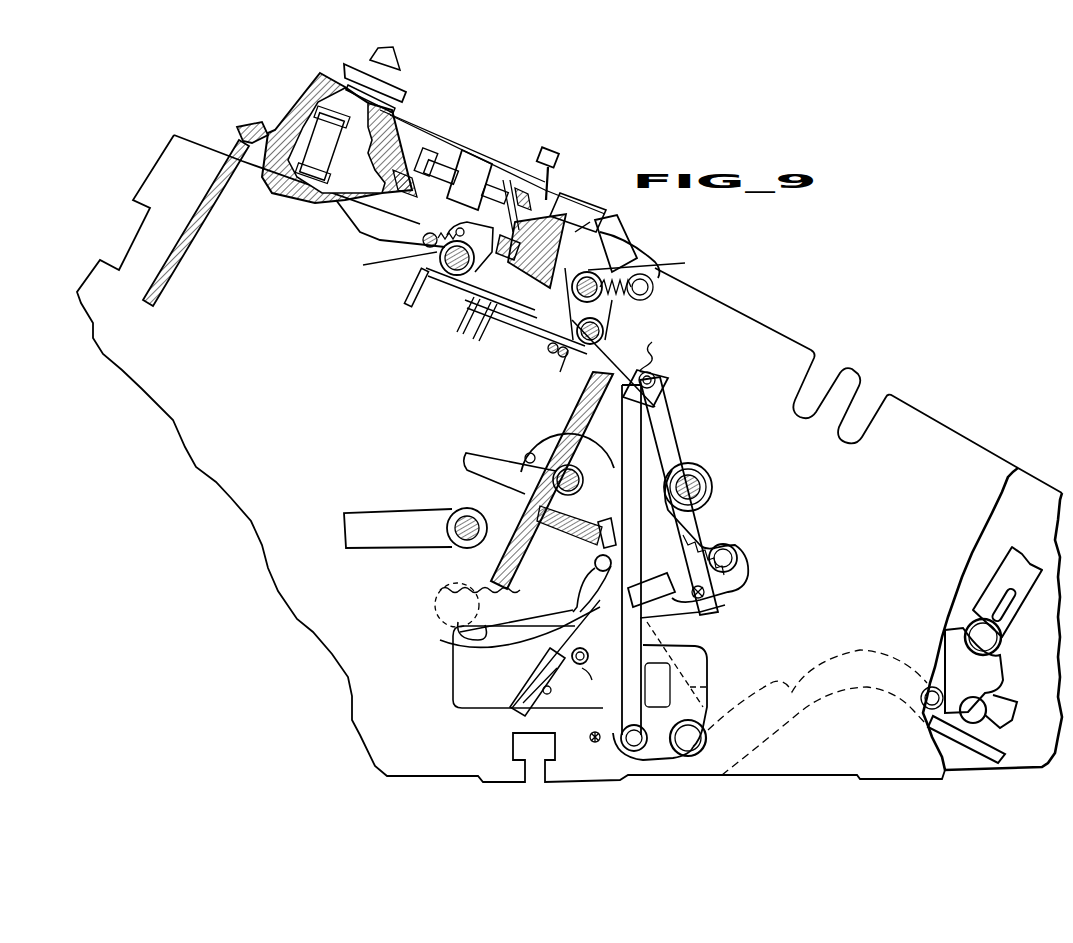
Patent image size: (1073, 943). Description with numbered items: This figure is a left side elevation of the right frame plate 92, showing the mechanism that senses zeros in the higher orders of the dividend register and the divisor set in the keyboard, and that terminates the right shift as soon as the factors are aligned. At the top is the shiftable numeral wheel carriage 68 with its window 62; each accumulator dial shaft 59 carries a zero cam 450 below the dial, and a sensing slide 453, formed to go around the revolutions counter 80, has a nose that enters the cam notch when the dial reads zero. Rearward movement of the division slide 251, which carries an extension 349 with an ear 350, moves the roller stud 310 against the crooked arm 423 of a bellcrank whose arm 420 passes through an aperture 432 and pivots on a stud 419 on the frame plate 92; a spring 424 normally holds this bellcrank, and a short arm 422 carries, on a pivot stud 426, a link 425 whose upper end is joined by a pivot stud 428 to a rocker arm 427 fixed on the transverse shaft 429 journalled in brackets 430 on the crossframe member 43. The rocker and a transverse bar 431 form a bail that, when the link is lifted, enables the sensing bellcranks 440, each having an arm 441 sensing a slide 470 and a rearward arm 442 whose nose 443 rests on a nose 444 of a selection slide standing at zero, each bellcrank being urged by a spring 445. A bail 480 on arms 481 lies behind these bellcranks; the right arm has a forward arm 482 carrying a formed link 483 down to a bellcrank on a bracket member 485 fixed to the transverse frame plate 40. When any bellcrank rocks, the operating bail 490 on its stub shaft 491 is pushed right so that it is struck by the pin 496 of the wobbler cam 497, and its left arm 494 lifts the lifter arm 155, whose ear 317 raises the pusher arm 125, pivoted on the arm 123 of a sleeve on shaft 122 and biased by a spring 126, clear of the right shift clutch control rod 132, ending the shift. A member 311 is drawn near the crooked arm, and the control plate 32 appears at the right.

The shiftable numeral wheel carriage 68 is at (322, 70).
The window 62 is at (400, 88).
The zero cam 450 is at (394, 107).
The sensing slide 453 is at (402, 114).
The accumulator dial shaft 59 is at (338, 147).
The revolutions counter 80 is at (443, 202).
The crossframe member 43 is at (553, 207).
The sensing slide 470 is at (580, 216).
The bracket 430 is at (580, 230).
The upwardly and rearwardly extending arm 441 is at (607, 247).
The bail 480 is at (625, 252).
The transverse bar 431 is at (650, 268).
The spring 445 is at (655, 283).
The sensing bellcrank 440 is at (620, 300).
The rocker arm 427 is at (615, 322).
The pivot stud 428 is at (667, 348).
The forwardly extending arm 482 is at (651, 372).
The formed link 483 is at (660, 450).
The arm 481 is at (550, 285).
The nose 443 is at (470, 303).
The nose 444 is at (533, 312).
The rearwardly extending arm 442 is at (545, 352).
The transverse shaft 429 is at (586, 381).
The transverse frame plate 40 is at (592, 412).
The arm 420 is at (697, 703).
The aperture 432 is at (710, 652).
The stud 419 is at (718, 765).
The short arm 422 is at (657, 750).
The pivot stud 426 is at (630, 752).
The link 425 is at (625, 730).
The spring 424 is at (560, 700).
The crooked arm 423 is at (540, 690).
The bar 311 is at (530, 715).
The roller stud 310 is at (582, 672).
The lifter arm 155 is at (512, 648).
The left-hand arm 494 is at (455, 633).
The extension 349 is at (467, 580).
The ear 350 is at (457, 588).
The stub shaft 491 is at (592, 570).
The wobbler cam 497 is at (548, 432).
The pin 496 is at (528, 453).
The bracket member 485 is at (480, 458).
The right shift clutch control rod 132 is at (495, 475).
The shaft 122 is at (700, 486).
The arm 123 is at (703, 518).
The spring 126 is at (720, 545).
The operating bail 490 is at (740, 570).
The pusher arm 125 is at (705, 610).
The ear 317 is at (705, 612).
The right frame plate 92 is at (980, 507).
The control plate 32 is at (1048, 640).
The division slide 251 is at (788, 748).